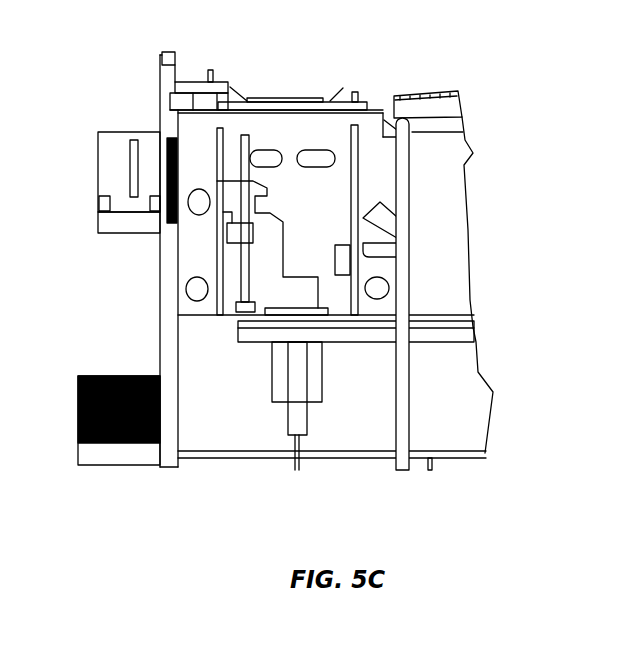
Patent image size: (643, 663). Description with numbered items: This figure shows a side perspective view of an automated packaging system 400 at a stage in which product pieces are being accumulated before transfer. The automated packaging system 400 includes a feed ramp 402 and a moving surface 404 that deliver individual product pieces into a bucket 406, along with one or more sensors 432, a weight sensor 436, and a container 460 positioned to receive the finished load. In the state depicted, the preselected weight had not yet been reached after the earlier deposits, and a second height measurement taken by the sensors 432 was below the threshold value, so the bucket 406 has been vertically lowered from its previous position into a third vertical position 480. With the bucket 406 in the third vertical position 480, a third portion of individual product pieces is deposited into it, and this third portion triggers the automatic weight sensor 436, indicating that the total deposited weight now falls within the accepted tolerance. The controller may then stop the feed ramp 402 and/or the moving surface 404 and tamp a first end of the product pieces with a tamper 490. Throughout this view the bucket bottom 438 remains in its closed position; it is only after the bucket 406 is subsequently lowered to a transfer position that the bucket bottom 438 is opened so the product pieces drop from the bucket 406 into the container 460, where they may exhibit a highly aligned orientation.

The automated packaging system 400 is at (530, 104).
The feed ramp 402 is at (437, 102).
The moving surface 404 is at (317, 103).
The bucket 406 is at (152, 157).
The sensors 432 is at (203, 90).
The weight sensor 436 is at (132, 174).
The bucket bottom 438 is at (148, 223).
The container 460 is at (142, 445).
The third vertical position 480 is at (117, 121).
The tamper 490 is at (172, 224).